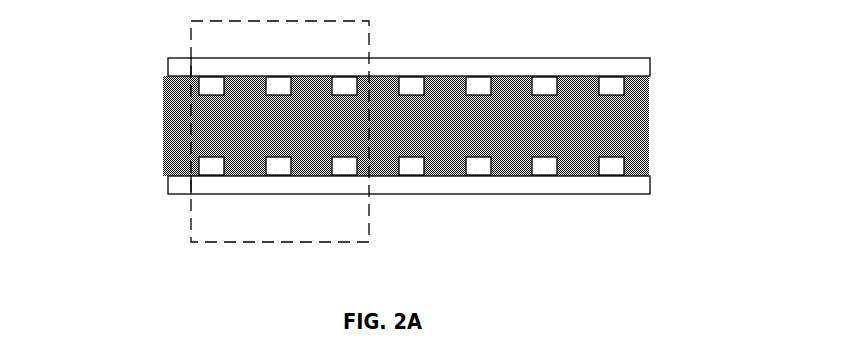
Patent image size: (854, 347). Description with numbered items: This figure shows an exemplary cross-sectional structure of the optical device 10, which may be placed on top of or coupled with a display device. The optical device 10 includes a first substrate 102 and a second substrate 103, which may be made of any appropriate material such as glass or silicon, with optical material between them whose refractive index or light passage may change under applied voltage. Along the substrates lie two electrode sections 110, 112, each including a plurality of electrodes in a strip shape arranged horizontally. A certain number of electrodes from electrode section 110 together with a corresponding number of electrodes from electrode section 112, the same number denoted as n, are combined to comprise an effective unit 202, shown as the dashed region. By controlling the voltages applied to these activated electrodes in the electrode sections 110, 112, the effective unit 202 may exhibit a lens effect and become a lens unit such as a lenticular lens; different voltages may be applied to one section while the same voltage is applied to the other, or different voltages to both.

The optical device 10 is at (598, 25).
The first substrate 102 is at (191, 69).
The second substrate 103 is at (191, 184).
The electrode section 110 is at (610, 88).
The electrode section 112 is at (610, 167).
The effective unit 202 is at (222, 227).